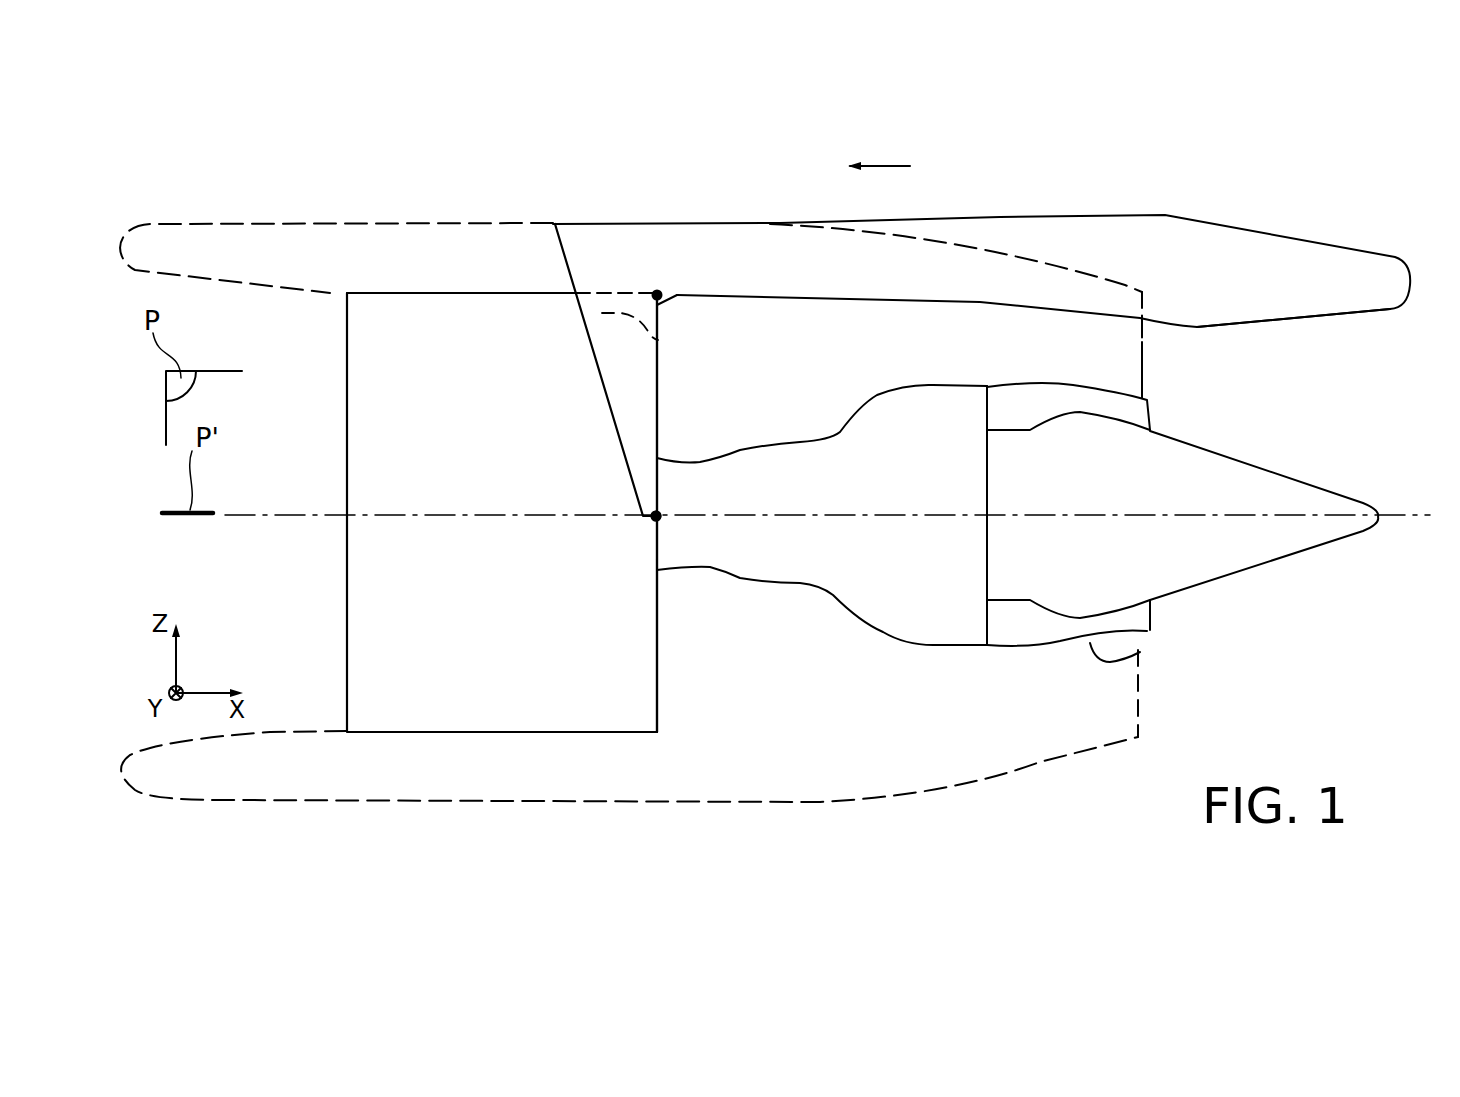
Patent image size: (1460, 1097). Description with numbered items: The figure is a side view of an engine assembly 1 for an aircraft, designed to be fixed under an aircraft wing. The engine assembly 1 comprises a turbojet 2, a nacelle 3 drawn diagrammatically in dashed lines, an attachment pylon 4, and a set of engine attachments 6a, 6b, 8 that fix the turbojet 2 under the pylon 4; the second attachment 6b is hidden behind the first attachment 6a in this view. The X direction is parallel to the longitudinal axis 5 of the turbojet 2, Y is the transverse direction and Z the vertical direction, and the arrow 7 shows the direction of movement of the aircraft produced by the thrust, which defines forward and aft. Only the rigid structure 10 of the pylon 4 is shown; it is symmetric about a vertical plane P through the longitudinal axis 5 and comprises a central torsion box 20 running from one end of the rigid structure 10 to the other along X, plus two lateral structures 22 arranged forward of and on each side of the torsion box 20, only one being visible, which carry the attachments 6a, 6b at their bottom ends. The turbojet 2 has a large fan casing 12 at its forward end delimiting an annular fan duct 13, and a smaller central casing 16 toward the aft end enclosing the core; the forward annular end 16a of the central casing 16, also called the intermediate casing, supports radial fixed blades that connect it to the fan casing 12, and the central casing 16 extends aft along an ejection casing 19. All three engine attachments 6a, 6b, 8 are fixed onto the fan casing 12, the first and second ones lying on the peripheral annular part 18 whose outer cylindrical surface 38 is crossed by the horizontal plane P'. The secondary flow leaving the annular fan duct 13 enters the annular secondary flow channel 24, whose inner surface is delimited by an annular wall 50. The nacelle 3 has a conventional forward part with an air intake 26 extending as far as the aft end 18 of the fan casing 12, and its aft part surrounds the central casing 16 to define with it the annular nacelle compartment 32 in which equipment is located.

The engine assembly 1 is at (200, 192).
The turbojet 2 is at (338, 432).
The nacelle 3 is at (378, 222).
The attachment pylon 4 is at (775, 233).
The longitudinal axis 5 is at (1410, 515).
The first engine attachment 6a is at (652, 521).
The second engine attachment 6b is at (656, 516).
The arrow 7 is at (880, 163).
The engine attachment 8 is at (657, 289).
The rigid structure 10 is at (1186, 214).
The fan casing 12 is at (370, 668).
The annular fan duct 13 is at (658, 340).
The central casing 16 is at (867, 442).
The forward annular end of central casing 16a is at (658, 548).
The peripheral annular part 18 is at (657, 698).
The ejection casing 19 is at (1140, 652).
The central torsion box 20 is at (1295, 243).
The lateral structure 22 is at (608, 368).
The annular secondary flow channel 24 is at (882, 350).
The air intake 26 is at (240, 797).
The nacelle compartment 32 is at (683, 457).
The outer cylindrical surface 38 is at (500, 733).
The annular wall 50 is at (1087, 368).